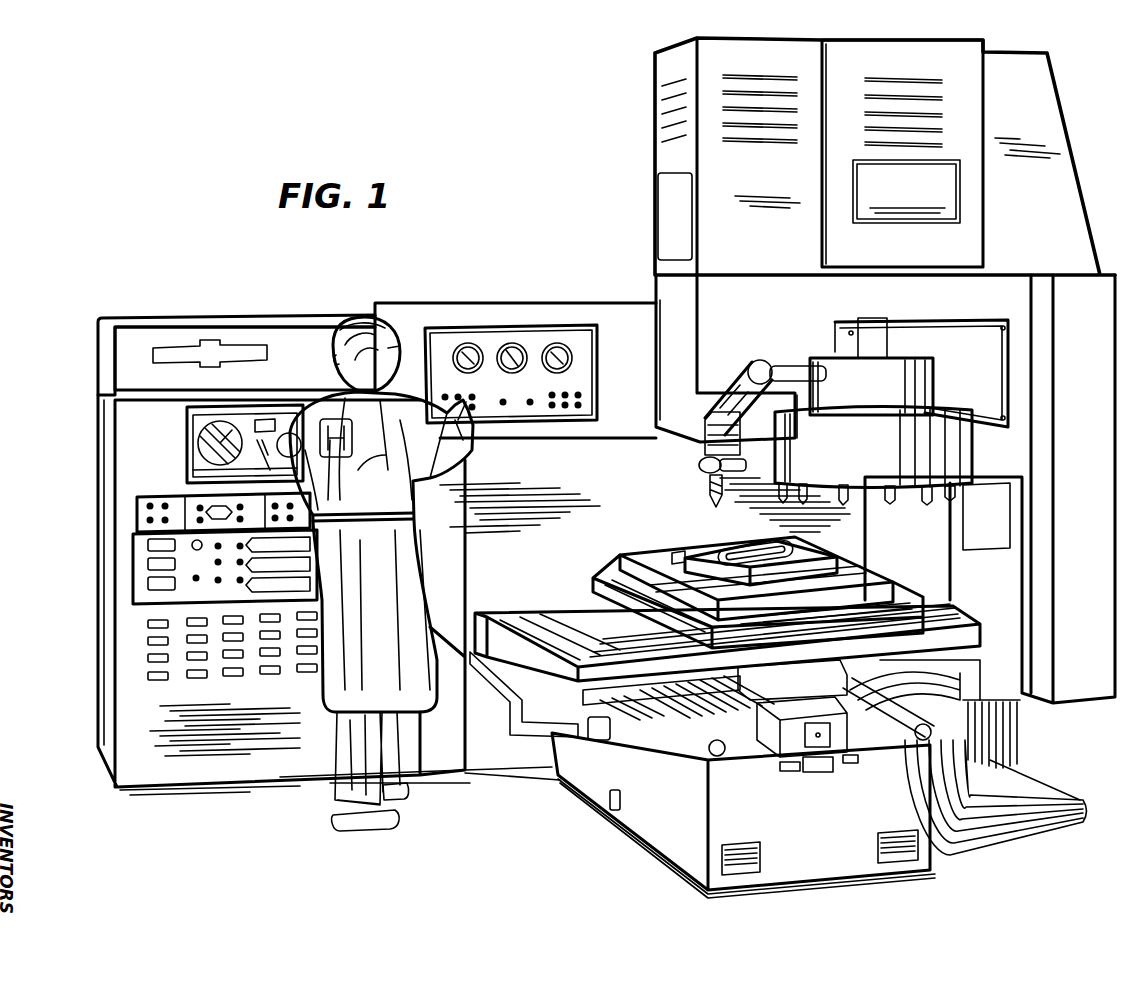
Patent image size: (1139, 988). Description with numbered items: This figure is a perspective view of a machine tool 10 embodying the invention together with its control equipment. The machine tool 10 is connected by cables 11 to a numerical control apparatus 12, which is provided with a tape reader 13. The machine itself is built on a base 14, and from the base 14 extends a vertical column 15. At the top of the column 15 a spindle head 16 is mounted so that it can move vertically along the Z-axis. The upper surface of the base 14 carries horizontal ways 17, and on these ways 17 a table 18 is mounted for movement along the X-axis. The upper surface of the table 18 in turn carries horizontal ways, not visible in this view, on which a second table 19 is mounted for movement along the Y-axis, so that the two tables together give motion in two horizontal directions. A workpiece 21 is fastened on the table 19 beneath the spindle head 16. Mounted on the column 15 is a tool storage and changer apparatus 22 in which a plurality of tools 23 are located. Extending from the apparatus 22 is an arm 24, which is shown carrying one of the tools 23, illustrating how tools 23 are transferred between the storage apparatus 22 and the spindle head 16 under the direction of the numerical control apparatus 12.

The machine tool 10 is at (620, 142).
The cables 11 is at (1063, 793).
The numerical control apparatus 12 is at (110, 461).
The tape reader 13 is at (198, 437).
The base 14 is at (657, 808).
The vertical column 15 is at (1023, 510).
The spindle head 16 is at (672, 373).
The horizontal ways 17 is at (721, 757).
The table 18 is at (513, 650).
The table 19 is at (595, 580).
The workpiece 21 is at (687, 557).
The tool storage and changer apparatus 22 is at (920, 388).
The tools 23 is at (708, 495).
The arm 24 is at (803, 370).